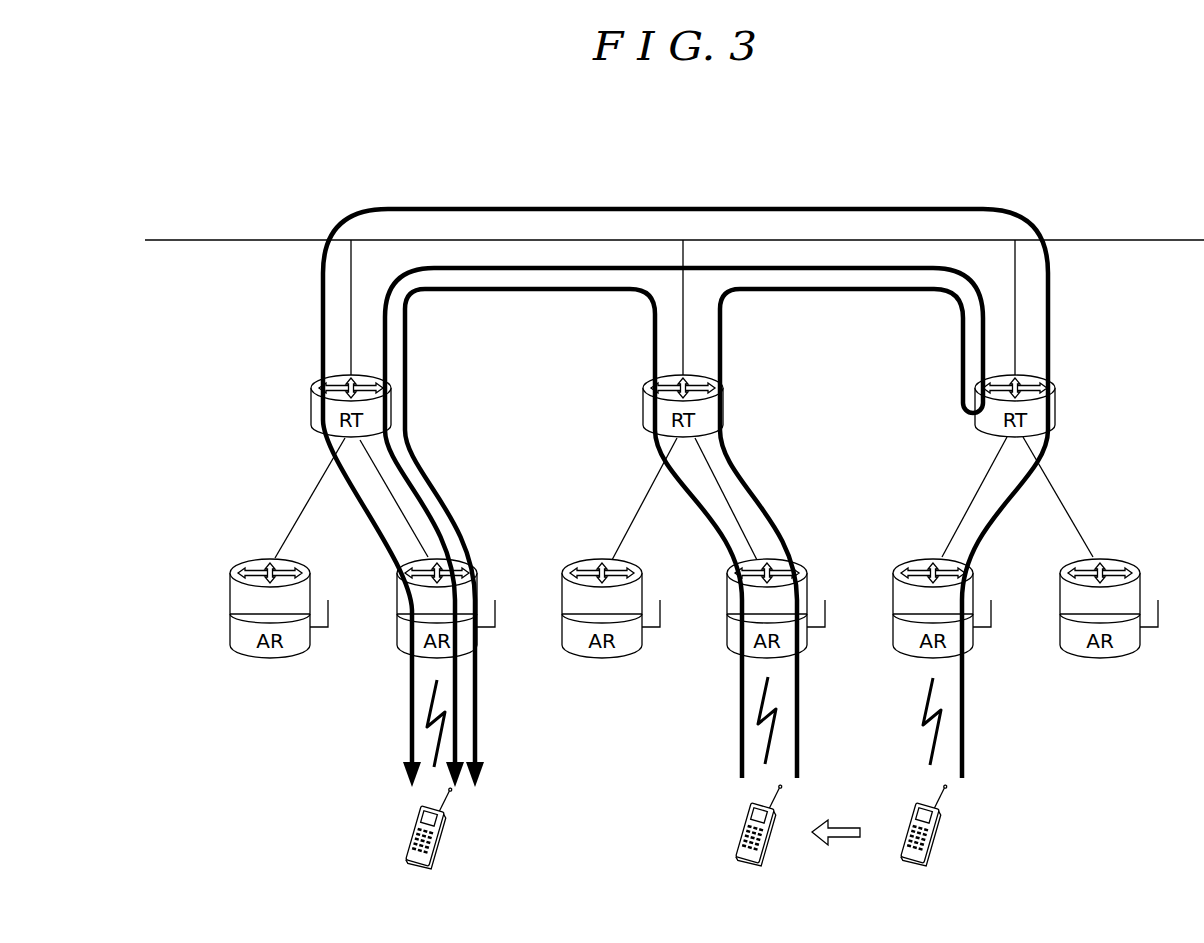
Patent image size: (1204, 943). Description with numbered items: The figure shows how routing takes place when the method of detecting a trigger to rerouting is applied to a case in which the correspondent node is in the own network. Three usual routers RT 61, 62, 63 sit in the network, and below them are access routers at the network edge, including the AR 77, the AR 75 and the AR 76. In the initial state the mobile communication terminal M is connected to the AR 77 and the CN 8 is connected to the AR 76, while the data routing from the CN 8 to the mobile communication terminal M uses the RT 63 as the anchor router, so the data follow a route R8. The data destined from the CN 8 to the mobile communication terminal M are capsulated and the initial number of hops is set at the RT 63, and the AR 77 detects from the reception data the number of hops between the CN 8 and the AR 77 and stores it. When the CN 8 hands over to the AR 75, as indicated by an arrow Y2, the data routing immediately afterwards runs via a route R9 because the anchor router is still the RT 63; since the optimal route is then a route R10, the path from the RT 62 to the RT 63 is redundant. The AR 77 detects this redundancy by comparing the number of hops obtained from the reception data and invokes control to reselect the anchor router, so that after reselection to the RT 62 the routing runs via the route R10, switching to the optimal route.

The RT 61 is at (312, 401).
The RT 62 is at (725, 400).
The RT 63 is at (1057, 400).
The AR 75 is at (808, 592).
The AR 76 is at (918, 560).
The AR 77 is at (478, 592).
The CN 8 is at (747, 820).
The mobile communication terminal M is at (413, 821).
The route R8 is at (773, 207).
The route R9 is at (860, 290).
The route R10 is at (553, 290).
The arrow Y2 is at (843, 826).